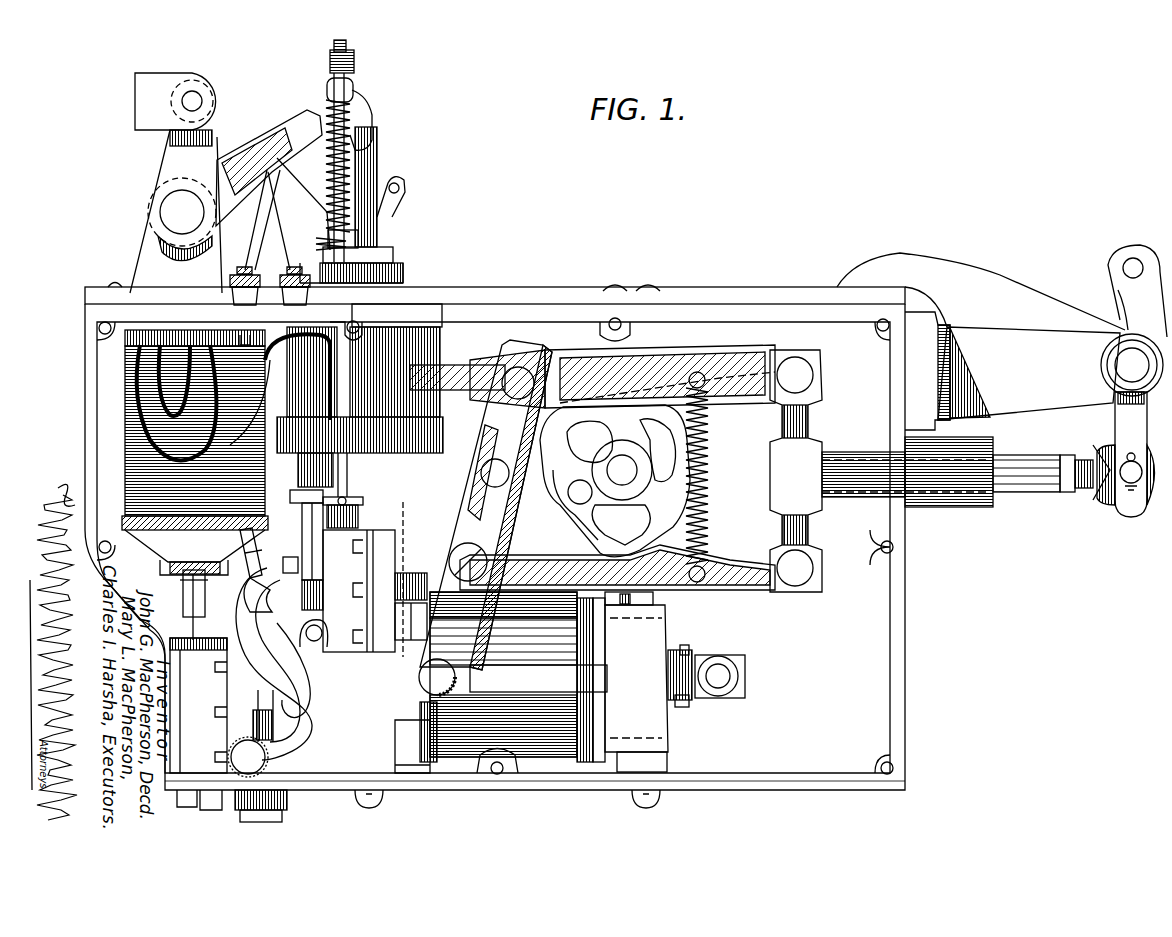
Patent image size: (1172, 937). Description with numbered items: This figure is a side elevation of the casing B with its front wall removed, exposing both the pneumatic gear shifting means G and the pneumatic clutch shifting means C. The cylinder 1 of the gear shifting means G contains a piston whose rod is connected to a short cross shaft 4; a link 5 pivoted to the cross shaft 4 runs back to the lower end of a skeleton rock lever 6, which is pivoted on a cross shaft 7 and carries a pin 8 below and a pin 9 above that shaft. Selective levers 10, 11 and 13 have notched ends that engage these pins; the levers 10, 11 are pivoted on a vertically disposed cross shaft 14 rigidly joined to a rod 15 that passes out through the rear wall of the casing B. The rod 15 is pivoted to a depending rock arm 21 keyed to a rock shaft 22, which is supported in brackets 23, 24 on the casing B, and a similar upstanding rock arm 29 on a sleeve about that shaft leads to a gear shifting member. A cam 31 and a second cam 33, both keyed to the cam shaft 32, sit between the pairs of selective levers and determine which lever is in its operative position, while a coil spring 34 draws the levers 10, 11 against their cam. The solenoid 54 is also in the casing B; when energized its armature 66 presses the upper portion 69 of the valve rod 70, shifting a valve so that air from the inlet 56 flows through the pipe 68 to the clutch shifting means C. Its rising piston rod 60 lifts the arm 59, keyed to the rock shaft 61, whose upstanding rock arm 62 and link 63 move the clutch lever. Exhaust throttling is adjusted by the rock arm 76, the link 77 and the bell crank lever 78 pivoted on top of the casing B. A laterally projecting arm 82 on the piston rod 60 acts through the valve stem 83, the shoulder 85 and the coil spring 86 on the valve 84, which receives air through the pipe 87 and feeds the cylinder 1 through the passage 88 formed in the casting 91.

The casing B is at (707, 308).
The pneumatic clutch shifting means C is at (405, 312).
The cylinder 1 is at (565, 740).
The cross shaft 4 is at (748, 662).
The link 5 is at (583, 678).
The skeleton rock lever 6 is at (470, 505).
The cross shaft 7 is at (482, 473).
The pin 8 is at (460, 558).
The pin 9 is at (515, 385).
The selective lever 10 is at (690, 580).
The selective lever 11 is at (716, 388).
The selective lever 13 is at (702, 365).
The vertically disposed cross shaft 14 is at (808, 425).
The rod 15 is at (862, 485).
The depending rock arm 21 is at (1118, 420).
The rock shaft 22 is at (1122, 365).
The bracket 23 is at (1015, 340).
The bracket 24 is at (942, 305).
The upstanding rock arm 29 is at (1118, 258).
The cam 31 is at (552, 450).
The cam shaft 32 is at (628, 470).
The cam 33 is at (580, 535).
The coil spring 34 is at (708, 472).
The solenoid 54 is at (120, 440).
The air inlet 56 is at (290, 812).
The arm 59 is at (285, 130).
The piston rod 60 is at (398, 212).
The rock shaft 61 is at (168, 214).
The upstanding rock arm 62 is at (168, 175).
The link 63 is at (168, 80).
The armature 66 is at (175, 570).
The pipe 68 is at (240, 602).
The upper portion of the valve rod 69 is at (182, 604).
The valve rod 70 is at (198, 632).
The rock arm 76 is at (318, 640).
The link 77 is at (252, 540).
The bell crank lever 78 is at (303, 210).
The laterally projecting arm 82 is at (364, 126).
The valve stem 83 is at (350, 160).
The valve 84 is at (352, 84).
The shoulder 85 is at (325, 62).
The coil spring 86 is at (378, 180).
The pipe 87 is at (358, 240).
The passage 88 is at (645, 598).
The casting 91 is at (412, 585).
The pneumatic gear shifting means G is at (500, 682).